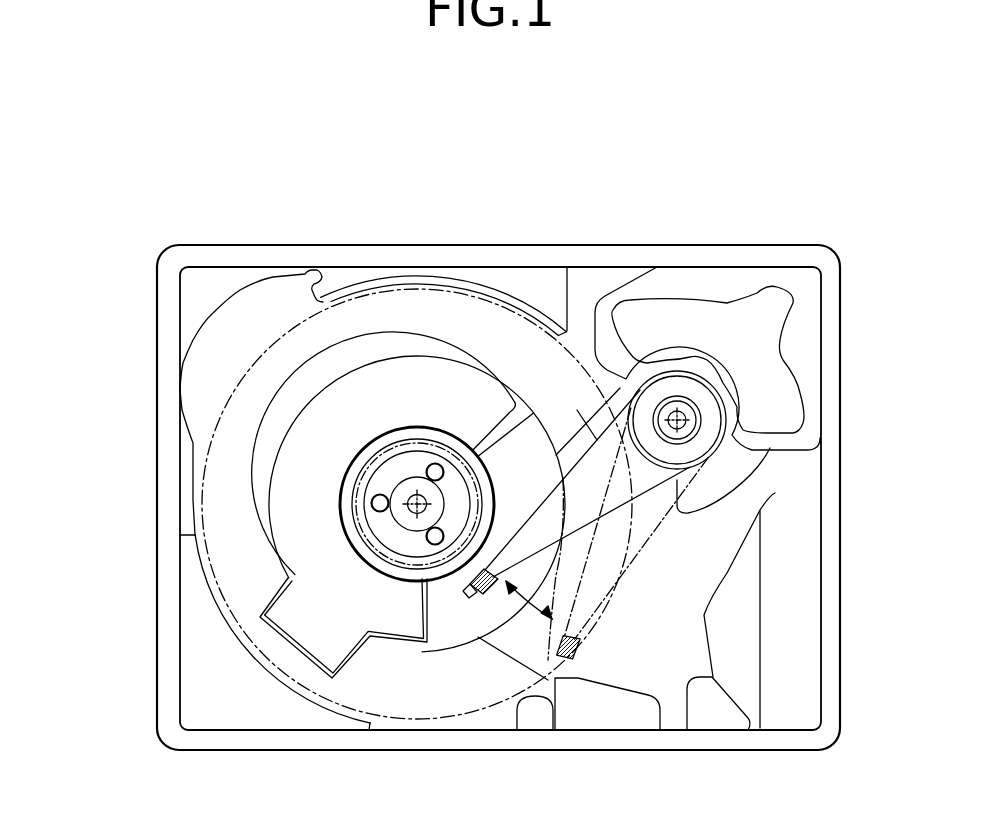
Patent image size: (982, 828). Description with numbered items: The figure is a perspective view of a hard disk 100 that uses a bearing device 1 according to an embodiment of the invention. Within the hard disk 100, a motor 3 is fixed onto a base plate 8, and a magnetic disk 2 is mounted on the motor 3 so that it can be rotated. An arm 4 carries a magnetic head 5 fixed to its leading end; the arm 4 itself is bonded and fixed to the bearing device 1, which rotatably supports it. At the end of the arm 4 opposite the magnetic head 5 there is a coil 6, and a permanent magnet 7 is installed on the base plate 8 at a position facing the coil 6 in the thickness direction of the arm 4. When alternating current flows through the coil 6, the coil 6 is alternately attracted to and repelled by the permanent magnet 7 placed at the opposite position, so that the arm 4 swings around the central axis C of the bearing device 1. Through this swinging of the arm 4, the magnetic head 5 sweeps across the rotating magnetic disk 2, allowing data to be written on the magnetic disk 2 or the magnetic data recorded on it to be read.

The hard disk 100 is at (142, 244).
The bearing device 1 is at (708, 439).
The magnetic disk 2 is at (423, 722).
The motor 3 is at (421, 464).
The arm 4 is at (596, 518).
The magnetic head 5 is at (471, 590).
The coil 6 is at (812, 392).
The permanent magnet 7 is at (731, 518).
The base plate 8 is at (170, 448).
The central axis C is at (683, 414).